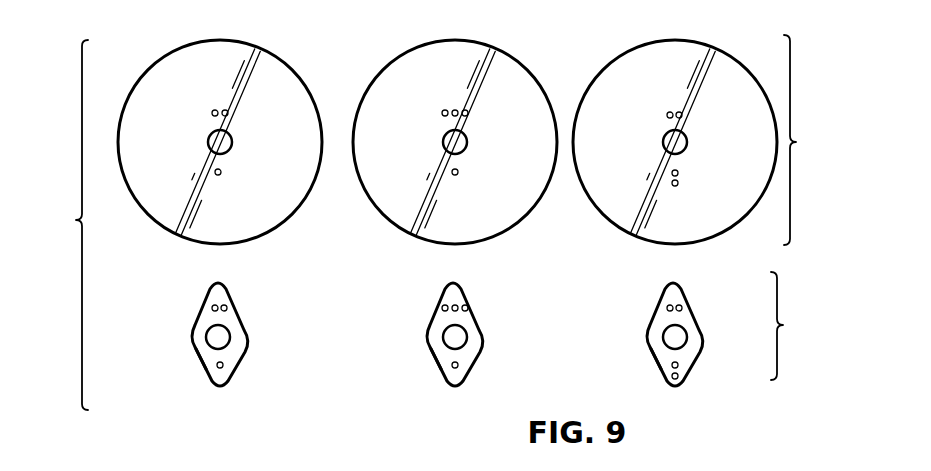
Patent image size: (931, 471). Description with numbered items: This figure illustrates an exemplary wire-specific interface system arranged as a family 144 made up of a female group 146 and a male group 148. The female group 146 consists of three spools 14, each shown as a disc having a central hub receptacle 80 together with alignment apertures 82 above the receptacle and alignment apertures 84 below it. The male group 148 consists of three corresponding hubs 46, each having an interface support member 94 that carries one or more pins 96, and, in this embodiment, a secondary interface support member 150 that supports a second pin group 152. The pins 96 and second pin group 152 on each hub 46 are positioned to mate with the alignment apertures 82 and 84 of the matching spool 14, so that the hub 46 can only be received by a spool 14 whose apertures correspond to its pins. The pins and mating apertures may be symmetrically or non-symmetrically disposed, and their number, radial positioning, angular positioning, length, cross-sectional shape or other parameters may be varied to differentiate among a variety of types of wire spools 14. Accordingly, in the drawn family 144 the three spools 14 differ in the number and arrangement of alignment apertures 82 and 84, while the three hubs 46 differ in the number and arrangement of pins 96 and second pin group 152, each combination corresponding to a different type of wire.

The spool 14 is at (442, 131).
The hub receptacle 80 is at (413, 131).
The alignment aperture 82 is at (479, 104).
The alignment aperture 84 is at (473, 185).
The interface support member 94 is at (418, 333).
The pin 96 is at (481, 294).
The hub 46 is at (475, 345).
The second pin group 152 is at (480, 377).
The secondary interface support member 150 is at (391, 362).
The family 144 is at (76, 220).
The female group 146 is at (797, 142).
The male group 148 is at (784, 325).